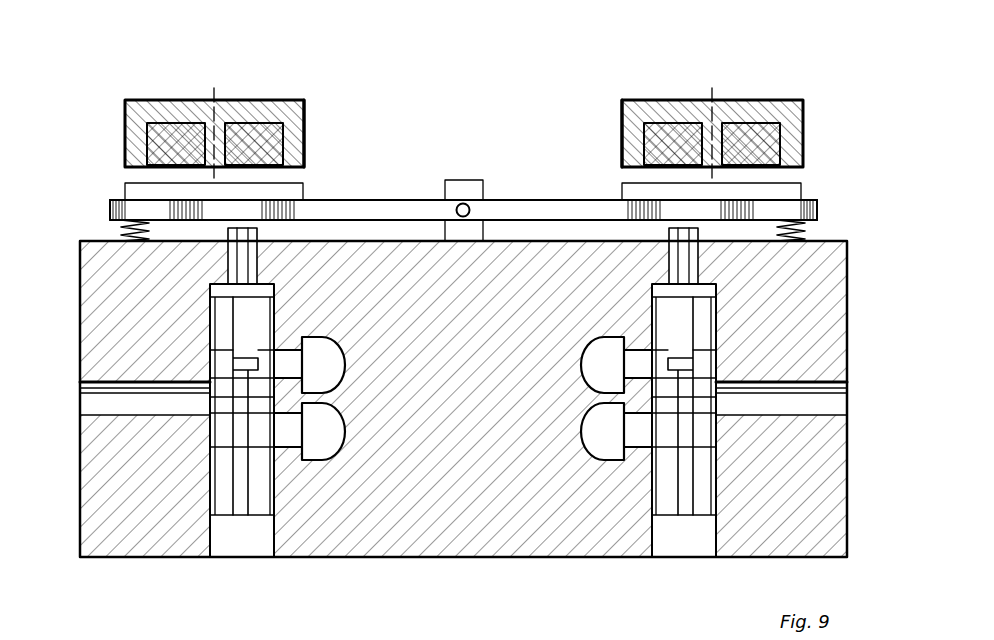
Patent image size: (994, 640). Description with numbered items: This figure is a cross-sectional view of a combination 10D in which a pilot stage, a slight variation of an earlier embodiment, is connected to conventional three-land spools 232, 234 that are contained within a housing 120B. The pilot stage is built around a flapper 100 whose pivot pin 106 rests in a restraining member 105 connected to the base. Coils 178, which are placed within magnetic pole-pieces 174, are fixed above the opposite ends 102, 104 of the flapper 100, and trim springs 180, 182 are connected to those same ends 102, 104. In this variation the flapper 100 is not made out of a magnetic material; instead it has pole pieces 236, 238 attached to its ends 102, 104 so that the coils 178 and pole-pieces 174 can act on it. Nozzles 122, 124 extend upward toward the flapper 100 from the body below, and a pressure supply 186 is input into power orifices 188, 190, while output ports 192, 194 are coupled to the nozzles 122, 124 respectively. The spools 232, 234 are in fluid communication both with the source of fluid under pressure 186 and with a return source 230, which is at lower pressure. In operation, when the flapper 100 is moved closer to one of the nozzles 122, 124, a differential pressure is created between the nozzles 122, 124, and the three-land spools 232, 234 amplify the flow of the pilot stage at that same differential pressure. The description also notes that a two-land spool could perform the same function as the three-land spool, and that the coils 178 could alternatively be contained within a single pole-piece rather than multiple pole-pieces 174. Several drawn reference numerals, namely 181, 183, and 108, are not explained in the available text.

The combination 10D is at (128, 68).
The magnetic pole-piece 174 is at (246, 100).
The coil 178 is at (262, 130).
The magnet housing 181 is at (293, 147).
The magnet housing 183 is at (615, 106).
The pole piece 236 is at (133, 190).
The pole piece 238 is at (620, 188).
The flapper 100 is at (426, 200).
The end of the flapper 102 is at (112, 208).
The end of the flapper 104 is at (818, 208).
The restraining member 105 is at (475, 183).
The pivot pin 106 is at (462, 203).
The second lever arm 108 is at (532, 208).
The nozzle 122 is at (278, 236).
The nozzle 124 is at (682, 232).
The trim spring 180 is at (122, 235).
The trim spring 182 is at (803, 233).
The power orifice 188 is at (240, 305).
The power orifice 190 is at (685, 307).
The three-land spool 232 is at (218, 325).
The three-land spool 234 is at (708, 332).
The output port 192 is at (113, 400).
The output port 194 is at (771, 406).
The source of fluid under pressure 186 is at (335, 365).
The return source 230 is at (593, 432).
The housing 120B is at (404, 558).